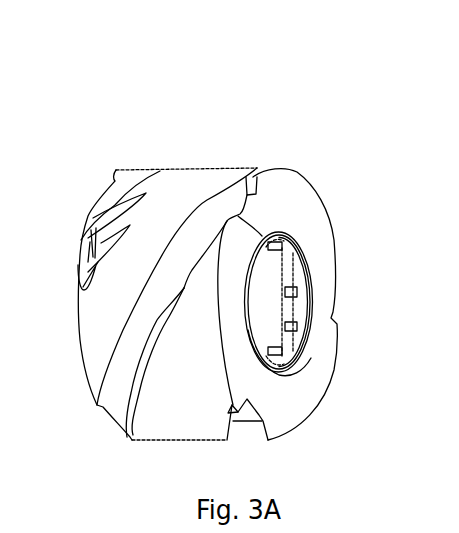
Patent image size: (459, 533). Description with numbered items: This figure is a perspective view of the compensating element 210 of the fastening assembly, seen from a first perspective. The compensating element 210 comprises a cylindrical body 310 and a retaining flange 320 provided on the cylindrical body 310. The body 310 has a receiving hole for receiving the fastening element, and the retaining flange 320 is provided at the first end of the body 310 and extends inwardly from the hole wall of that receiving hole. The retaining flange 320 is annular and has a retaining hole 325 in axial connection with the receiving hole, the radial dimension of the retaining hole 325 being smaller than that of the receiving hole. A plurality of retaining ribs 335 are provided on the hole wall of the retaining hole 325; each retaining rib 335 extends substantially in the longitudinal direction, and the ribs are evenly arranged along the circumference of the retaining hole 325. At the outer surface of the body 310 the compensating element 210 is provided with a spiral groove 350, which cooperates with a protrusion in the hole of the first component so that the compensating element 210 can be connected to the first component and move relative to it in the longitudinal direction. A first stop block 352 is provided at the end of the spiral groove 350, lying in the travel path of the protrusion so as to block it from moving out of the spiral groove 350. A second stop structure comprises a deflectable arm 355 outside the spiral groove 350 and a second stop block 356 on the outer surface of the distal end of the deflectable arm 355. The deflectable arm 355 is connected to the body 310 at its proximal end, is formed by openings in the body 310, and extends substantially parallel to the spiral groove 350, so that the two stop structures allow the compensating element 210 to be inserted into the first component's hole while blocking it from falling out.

The compensating element 210 is at (326, 76).
The cylindrical body 310 is at (167, 192).
The retaining flange 320 is at (280, 228).
The retaining hole 325 is at (306, 285).
The retaining rib 335 is at (295, 354).
The spiral groove 350 is at (210, 208).
The first stop block 352 is at (251, 176).
The deflectable arm 355 is at (115, 225).
The second stop block 356 is at (86, 247).